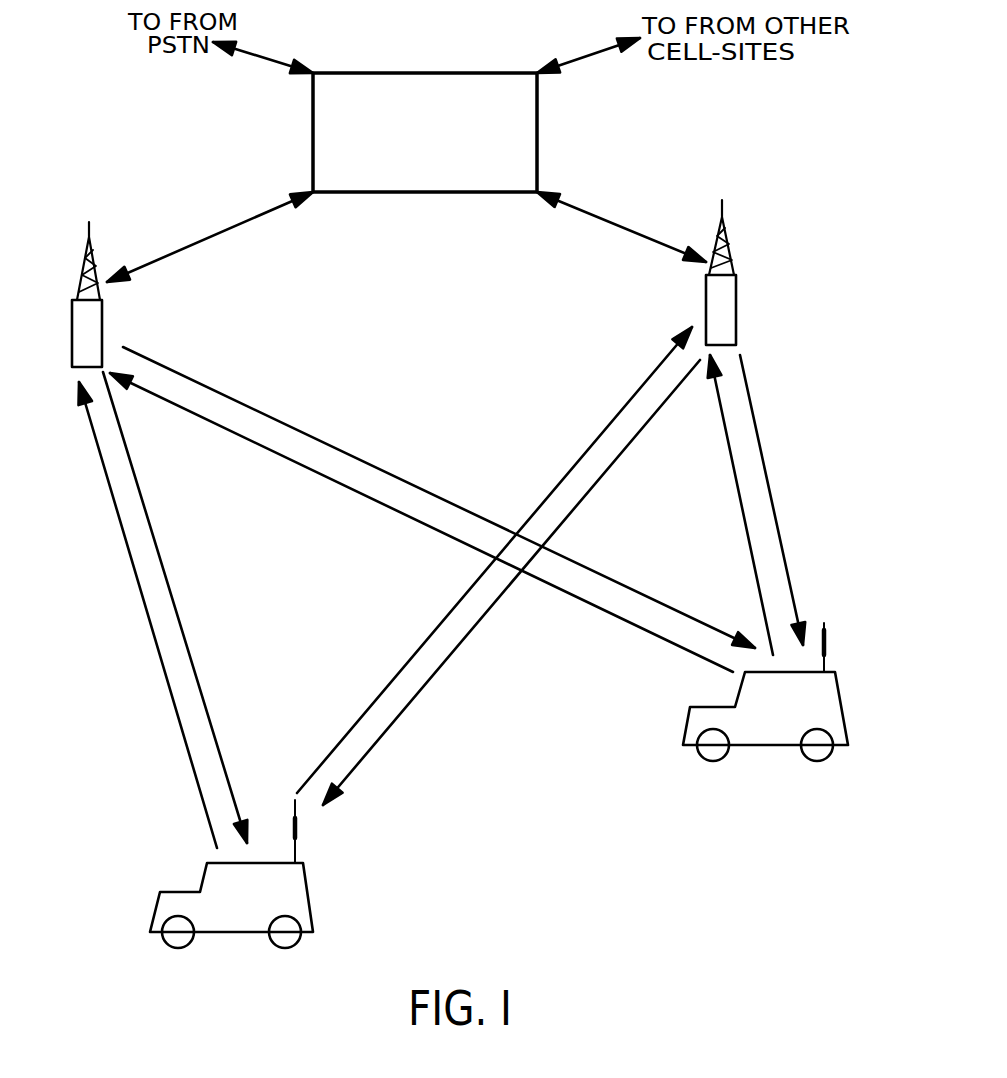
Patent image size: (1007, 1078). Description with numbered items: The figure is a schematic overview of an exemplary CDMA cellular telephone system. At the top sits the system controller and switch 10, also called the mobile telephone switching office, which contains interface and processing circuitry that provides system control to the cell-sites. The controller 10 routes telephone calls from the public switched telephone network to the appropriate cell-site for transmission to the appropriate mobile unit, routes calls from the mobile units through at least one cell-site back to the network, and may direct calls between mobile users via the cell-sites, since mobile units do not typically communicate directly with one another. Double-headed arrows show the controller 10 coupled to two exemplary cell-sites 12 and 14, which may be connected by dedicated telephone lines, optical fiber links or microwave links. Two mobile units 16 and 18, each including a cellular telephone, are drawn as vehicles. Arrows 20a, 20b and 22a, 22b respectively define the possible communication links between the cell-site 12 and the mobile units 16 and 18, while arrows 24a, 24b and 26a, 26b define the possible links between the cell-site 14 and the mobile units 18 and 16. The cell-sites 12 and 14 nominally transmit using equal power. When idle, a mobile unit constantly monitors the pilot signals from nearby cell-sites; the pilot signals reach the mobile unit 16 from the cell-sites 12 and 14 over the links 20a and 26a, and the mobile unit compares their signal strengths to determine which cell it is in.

The system controller and switch 10 is at (438, 73).
The cell-site 12 is at (70, 327).
The cell-site 14 is at (738, 296).
The mobile unit 16 is at (313, 882).
The mobile unit 18 is at (683, 720).
The arrow 20a is at (192, 647).
The arrow 20b is at (170, 693).
The arrow 22a is at (332, 447).
The arrow 22b is at (313, 470).
The arrow 24a is at (757, 422).
The arrow 24b is at (742, 515).
The arrow 26a is at (443, 665).
The arrow 26b is at (398, 673).